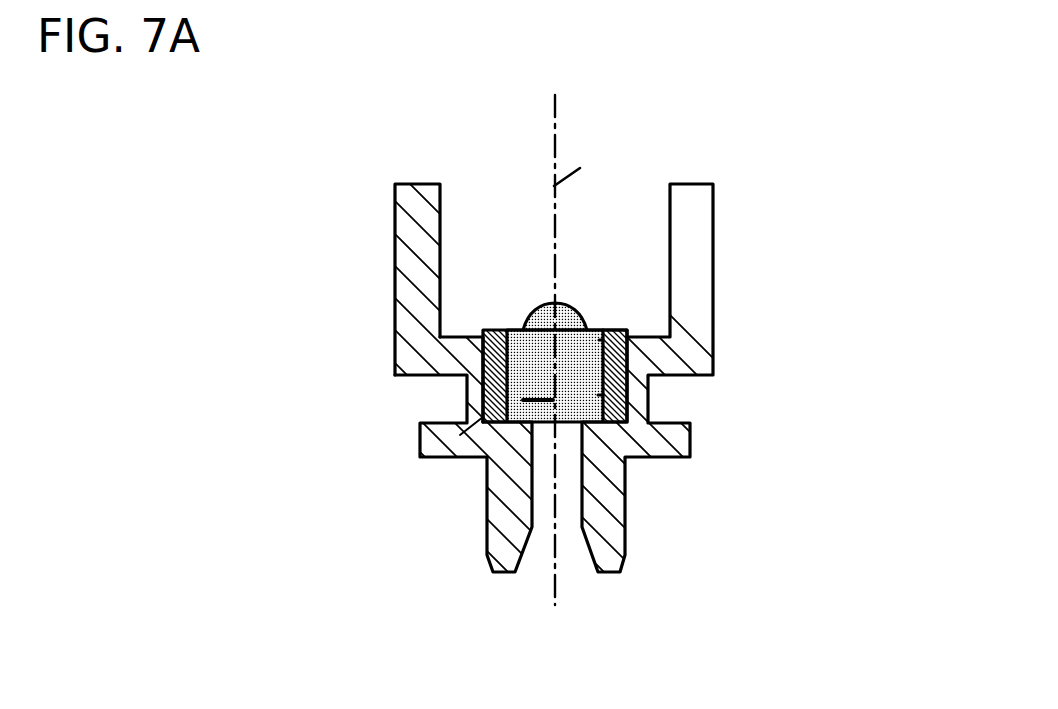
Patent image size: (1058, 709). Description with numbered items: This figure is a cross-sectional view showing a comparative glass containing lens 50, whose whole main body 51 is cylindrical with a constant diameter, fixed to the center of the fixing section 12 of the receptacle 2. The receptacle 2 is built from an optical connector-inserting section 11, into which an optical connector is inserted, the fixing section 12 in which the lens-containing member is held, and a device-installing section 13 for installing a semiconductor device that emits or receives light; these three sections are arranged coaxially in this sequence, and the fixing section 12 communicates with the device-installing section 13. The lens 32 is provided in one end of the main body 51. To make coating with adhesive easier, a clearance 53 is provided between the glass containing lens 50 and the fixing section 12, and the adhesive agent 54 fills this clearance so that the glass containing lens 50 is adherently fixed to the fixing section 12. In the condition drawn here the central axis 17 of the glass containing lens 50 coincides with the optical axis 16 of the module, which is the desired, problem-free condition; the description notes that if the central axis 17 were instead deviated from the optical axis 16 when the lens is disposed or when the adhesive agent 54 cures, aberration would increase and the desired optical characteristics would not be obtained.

The receptacle 2 is at (698, 256).
The optical connector-inserting section 11 is at (533, 467).
The fixing section 12 is at (482, 352).
The device-installing section 13 is at (438, 235).
The optical axis 16 is at (580, 168).
The central axis 17 is at (420, 445).
The lens 32 is at (540, 307).
The glass containing lens 50 is at (627, 350).
The main body 51 is at (627, 405).
The clearance 53 is at (617, 323).
The adhesive agent 54 is at (590, 324).